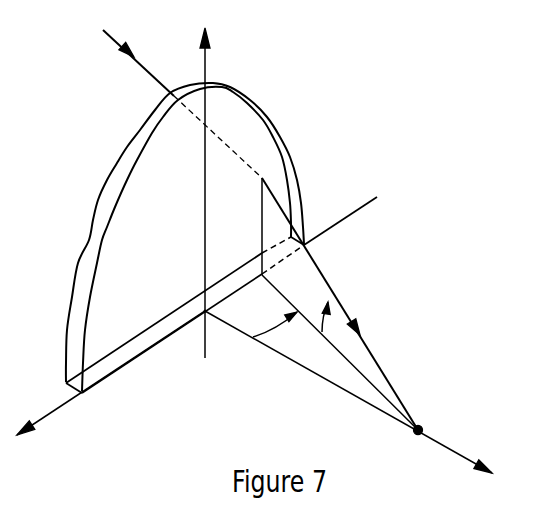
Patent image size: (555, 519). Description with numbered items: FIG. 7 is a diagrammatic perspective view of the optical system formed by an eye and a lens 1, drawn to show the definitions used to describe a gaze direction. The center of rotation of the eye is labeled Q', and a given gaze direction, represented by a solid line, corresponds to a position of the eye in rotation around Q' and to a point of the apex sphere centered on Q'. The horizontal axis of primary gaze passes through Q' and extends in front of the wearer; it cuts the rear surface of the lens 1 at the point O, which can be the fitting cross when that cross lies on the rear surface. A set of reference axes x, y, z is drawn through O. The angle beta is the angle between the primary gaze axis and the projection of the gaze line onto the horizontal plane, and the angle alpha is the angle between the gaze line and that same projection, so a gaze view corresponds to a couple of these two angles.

The parabolic mirror 1 is at (84, 242).
The x axis x is at (357, 392).
The y axis y is at (212, 184).
The z axis z is at (111, 386).
The point O is at (193, 334).
The center of rotation of the eye Q' is at (434, 420).